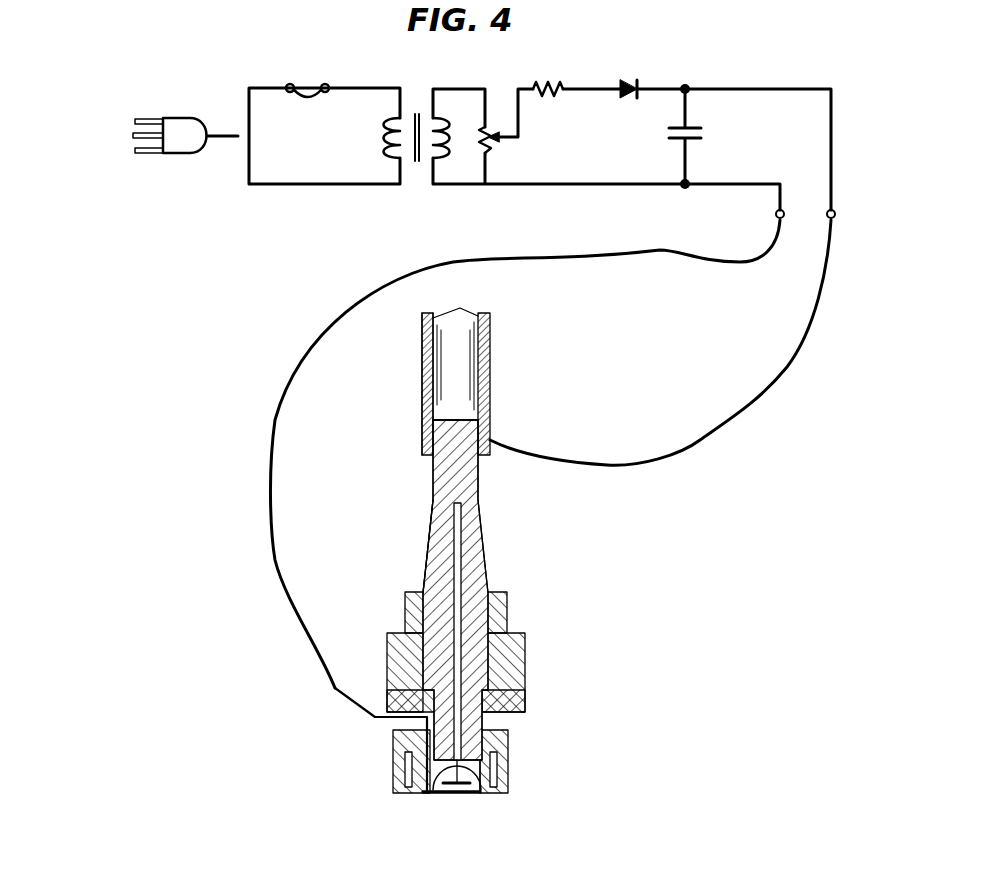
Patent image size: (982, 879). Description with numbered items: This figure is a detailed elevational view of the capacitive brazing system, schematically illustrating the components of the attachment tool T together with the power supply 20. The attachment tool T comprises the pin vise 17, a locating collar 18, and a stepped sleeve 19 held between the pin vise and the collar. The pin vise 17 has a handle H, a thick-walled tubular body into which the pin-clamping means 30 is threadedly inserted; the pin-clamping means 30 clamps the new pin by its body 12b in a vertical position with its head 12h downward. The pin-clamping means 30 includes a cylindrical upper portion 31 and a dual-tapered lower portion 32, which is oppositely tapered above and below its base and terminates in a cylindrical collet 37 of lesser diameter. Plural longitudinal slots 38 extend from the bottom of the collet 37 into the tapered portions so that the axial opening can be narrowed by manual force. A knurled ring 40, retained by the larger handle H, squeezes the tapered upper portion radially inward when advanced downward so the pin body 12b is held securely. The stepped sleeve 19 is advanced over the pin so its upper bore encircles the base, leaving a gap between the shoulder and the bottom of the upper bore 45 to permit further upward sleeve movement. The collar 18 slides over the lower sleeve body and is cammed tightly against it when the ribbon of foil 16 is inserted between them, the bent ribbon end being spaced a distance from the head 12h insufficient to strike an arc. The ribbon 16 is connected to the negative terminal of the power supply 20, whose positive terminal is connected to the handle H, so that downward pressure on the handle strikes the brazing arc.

The power supply 20 is at (742, 64).
The ribbon of foil 16 is at (345, 703).
The cylindrical upper portion 31 is at (478, 487).
The pin vise 17 is at (412, 420).
The handle H is at (422, 400).
The pin-clamping means 30 is at (485, 525).
The dual-tapered lower portion 32 is at (427, 568).
The knurled ring 40 is at (507, 607).
The stepped sleeve 19 is at (525, 673).
The bottom of the upper bore 45 is at (388, 680).
The longitudinal slots 38 is at (508, 755).
The locating collar 18 is at (510, 765).
The collet 37 is at (440, 778).
The pin body 12b is at (475, 795).
The pin head 12h is at (450, 795).
The attachment tool T is at (618, 523).